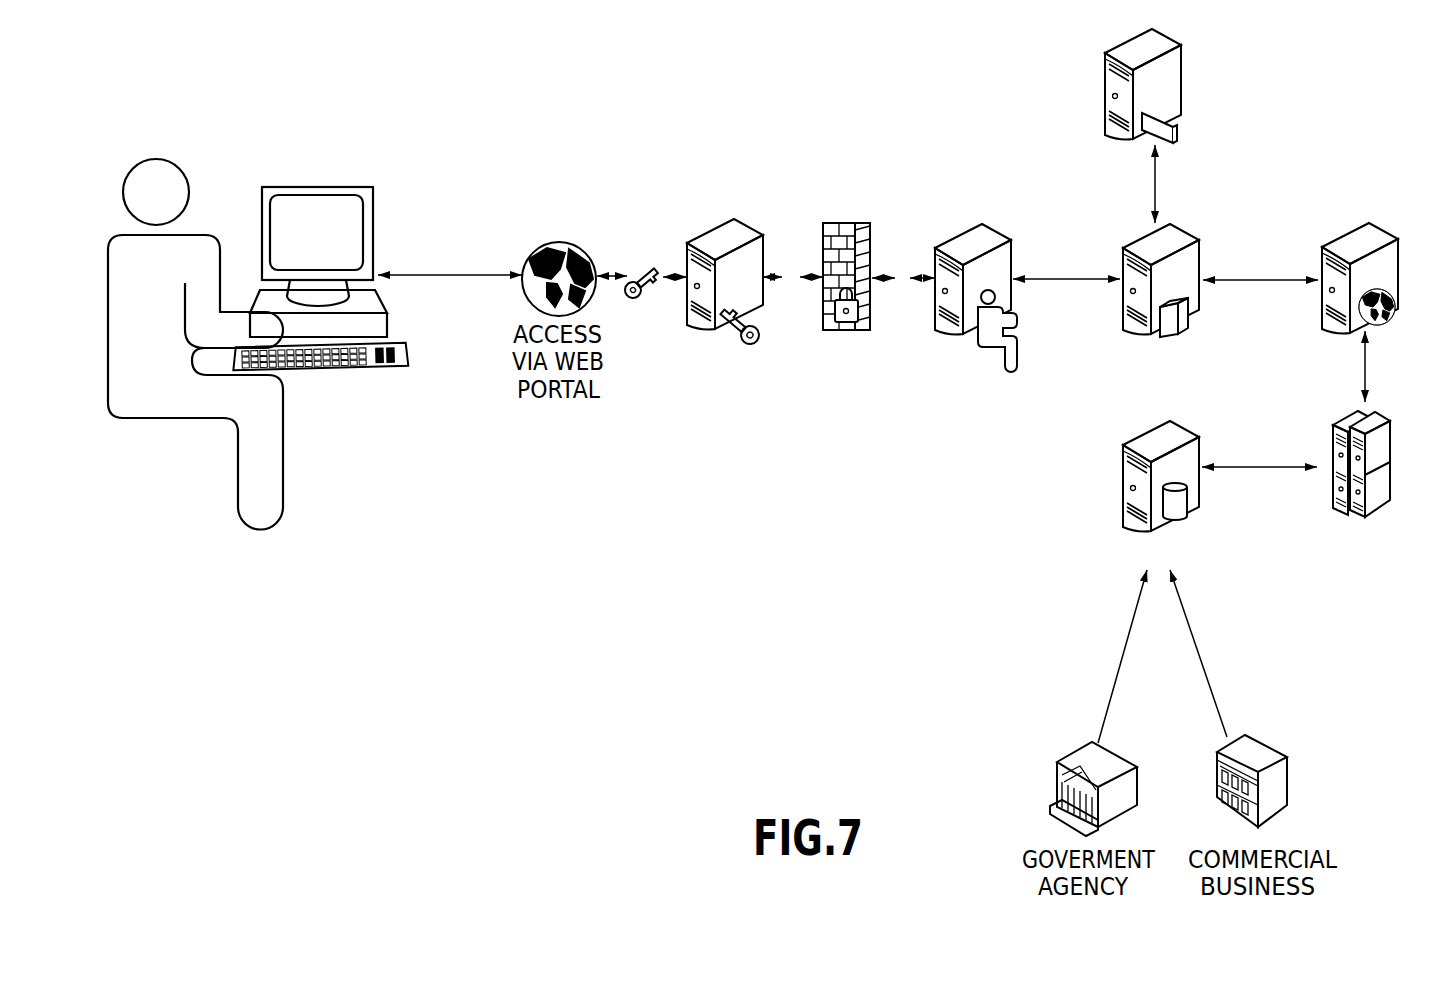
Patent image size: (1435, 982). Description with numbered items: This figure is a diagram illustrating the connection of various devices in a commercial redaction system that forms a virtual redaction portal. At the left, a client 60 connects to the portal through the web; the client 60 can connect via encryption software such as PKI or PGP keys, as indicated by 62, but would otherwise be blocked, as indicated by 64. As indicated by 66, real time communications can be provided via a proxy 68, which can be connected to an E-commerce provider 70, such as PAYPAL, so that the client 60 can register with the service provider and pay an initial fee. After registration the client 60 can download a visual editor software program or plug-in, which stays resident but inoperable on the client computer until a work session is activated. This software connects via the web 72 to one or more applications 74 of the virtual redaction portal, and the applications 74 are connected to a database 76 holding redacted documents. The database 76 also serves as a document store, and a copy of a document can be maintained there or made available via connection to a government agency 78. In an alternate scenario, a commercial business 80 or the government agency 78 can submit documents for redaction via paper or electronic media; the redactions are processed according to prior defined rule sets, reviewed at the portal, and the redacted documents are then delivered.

The client 60 is at (369, 170).
The encryption software connection 62 is at (756, 199).
The blocked connection 64 is at (876, 199).
The real time communications 66 is at (993, 227).
The proxy 68 is at (1185, 227).
The E-commerce provider 70 is at (1196, 68).
The web 72 is at (1383, 228).
The applications 74 is at (1384, 421).
The database 76 is at (1142, 436).
The government agency 78 is at (1078, 745).
The commercial business 80 is at (1273, 743).